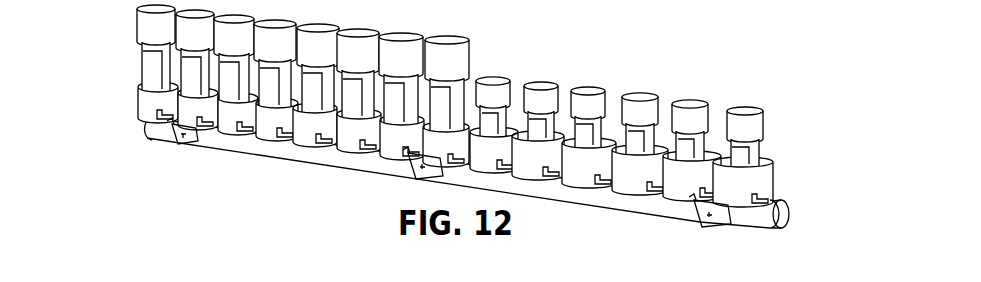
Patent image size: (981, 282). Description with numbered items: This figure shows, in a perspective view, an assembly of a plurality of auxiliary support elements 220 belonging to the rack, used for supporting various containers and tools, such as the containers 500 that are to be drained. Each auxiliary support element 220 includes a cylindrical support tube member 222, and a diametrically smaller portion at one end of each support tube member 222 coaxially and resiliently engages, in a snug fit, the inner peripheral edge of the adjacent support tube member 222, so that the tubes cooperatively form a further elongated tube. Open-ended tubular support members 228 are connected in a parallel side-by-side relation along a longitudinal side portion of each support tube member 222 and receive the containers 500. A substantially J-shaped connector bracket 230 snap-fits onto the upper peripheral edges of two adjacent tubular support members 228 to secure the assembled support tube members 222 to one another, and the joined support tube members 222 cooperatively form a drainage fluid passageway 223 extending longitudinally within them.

In FIG. 12, the auxiliary support element 220 is at (497, 142).
In FIG. 12, the container 500 is at (462, 38).
In FIG. 12, the support tube member 222 is at (340, 155).
In FIG. 12, the tubular support member 228 is at (764, 157).
In FIG. 12, the drainage fluid passageway 223 is at (763, 211).
The connector bracket 230 is at (188, 268).